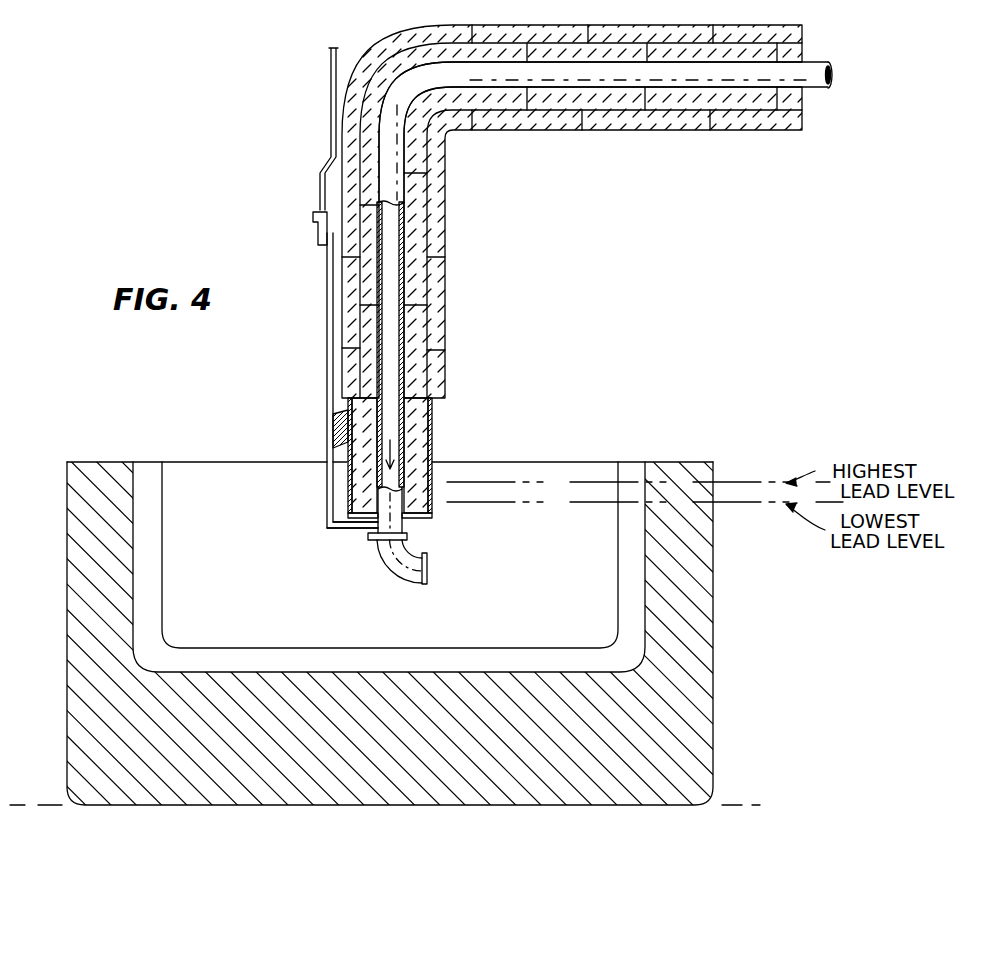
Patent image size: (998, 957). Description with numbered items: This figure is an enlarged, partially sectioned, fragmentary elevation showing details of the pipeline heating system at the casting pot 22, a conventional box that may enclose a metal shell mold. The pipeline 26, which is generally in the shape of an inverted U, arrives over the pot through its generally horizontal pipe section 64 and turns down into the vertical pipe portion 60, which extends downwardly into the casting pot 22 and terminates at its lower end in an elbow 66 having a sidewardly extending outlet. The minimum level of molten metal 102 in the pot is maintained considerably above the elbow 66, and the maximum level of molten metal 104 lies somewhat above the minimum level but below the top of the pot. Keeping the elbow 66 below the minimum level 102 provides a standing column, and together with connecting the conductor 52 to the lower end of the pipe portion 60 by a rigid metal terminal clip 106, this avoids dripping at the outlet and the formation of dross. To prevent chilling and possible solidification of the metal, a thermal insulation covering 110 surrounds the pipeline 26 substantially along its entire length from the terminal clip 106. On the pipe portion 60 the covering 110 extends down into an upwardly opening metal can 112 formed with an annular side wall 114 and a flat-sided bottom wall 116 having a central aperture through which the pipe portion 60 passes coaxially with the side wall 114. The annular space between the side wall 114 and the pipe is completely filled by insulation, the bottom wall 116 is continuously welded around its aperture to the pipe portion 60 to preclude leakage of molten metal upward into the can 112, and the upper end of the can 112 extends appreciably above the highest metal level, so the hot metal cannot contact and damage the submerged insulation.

The casting pot 22 is at (713, 648).
The pipeline 26 is at (748, 97).
The conductor 52 is at (331, 90).
The vertical pipe portion 60 is at (405, 173).
The horizontal pipe section 64 is at (572, 90).
The elbow 66 is at (405, 582).
The minimum level of molten metal 102 is at (728, 503).
The maximum level of molten metal 104 is at (728, 483).
The terminal clip 106 is at (327, 320).
The thermal insulation covering 110 is at (437, 228).
The metal can 112 is at (436, 418).
The annular side wall 114 is at (345, 478).
The bottom wall 116 is at (352, 528).